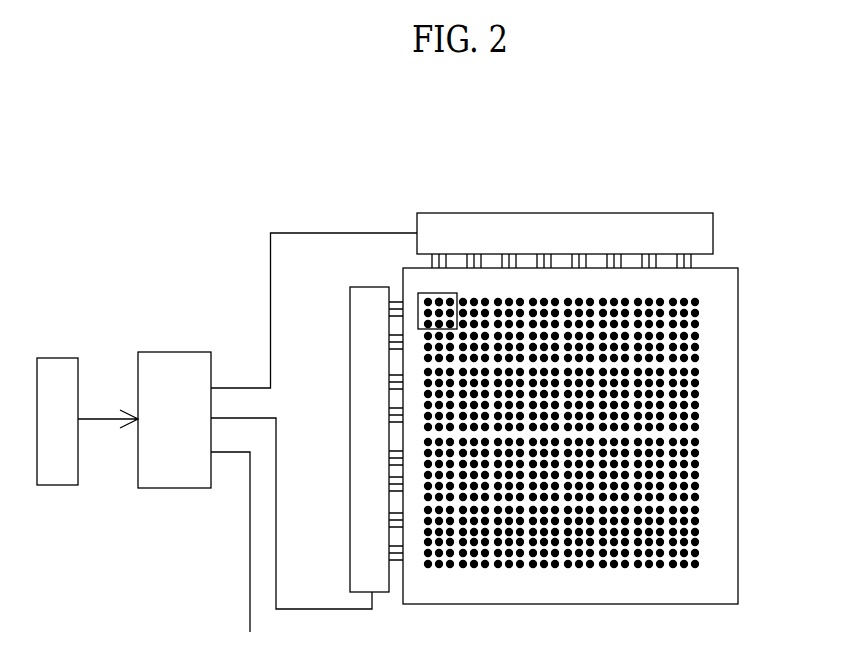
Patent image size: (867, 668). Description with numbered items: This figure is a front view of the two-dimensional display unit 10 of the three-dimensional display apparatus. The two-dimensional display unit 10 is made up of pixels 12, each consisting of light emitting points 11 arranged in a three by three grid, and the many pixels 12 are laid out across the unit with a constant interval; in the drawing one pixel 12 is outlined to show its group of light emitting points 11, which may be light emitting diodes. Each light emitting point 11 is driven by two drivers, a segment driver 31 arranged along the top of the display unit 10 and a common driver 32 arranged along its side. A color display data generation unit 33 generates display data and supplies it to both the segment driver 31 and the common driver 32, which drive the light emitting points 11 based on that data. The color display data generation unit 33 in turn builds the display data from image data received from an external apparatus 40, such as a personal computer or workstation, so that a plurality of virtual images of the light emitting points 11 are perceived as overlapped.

The two-dimensional display unit 10 is at (735, 288).
The light emitting point 11 is at (422, 293).
The pixel 12 is at (442, 295).
The segment driver 31 is at (707, 225).
The common driver 32 is at (370, 573).
The color display data generation unit 33 is at (163, 350).
The external apparatus 40 is at (53, 358).